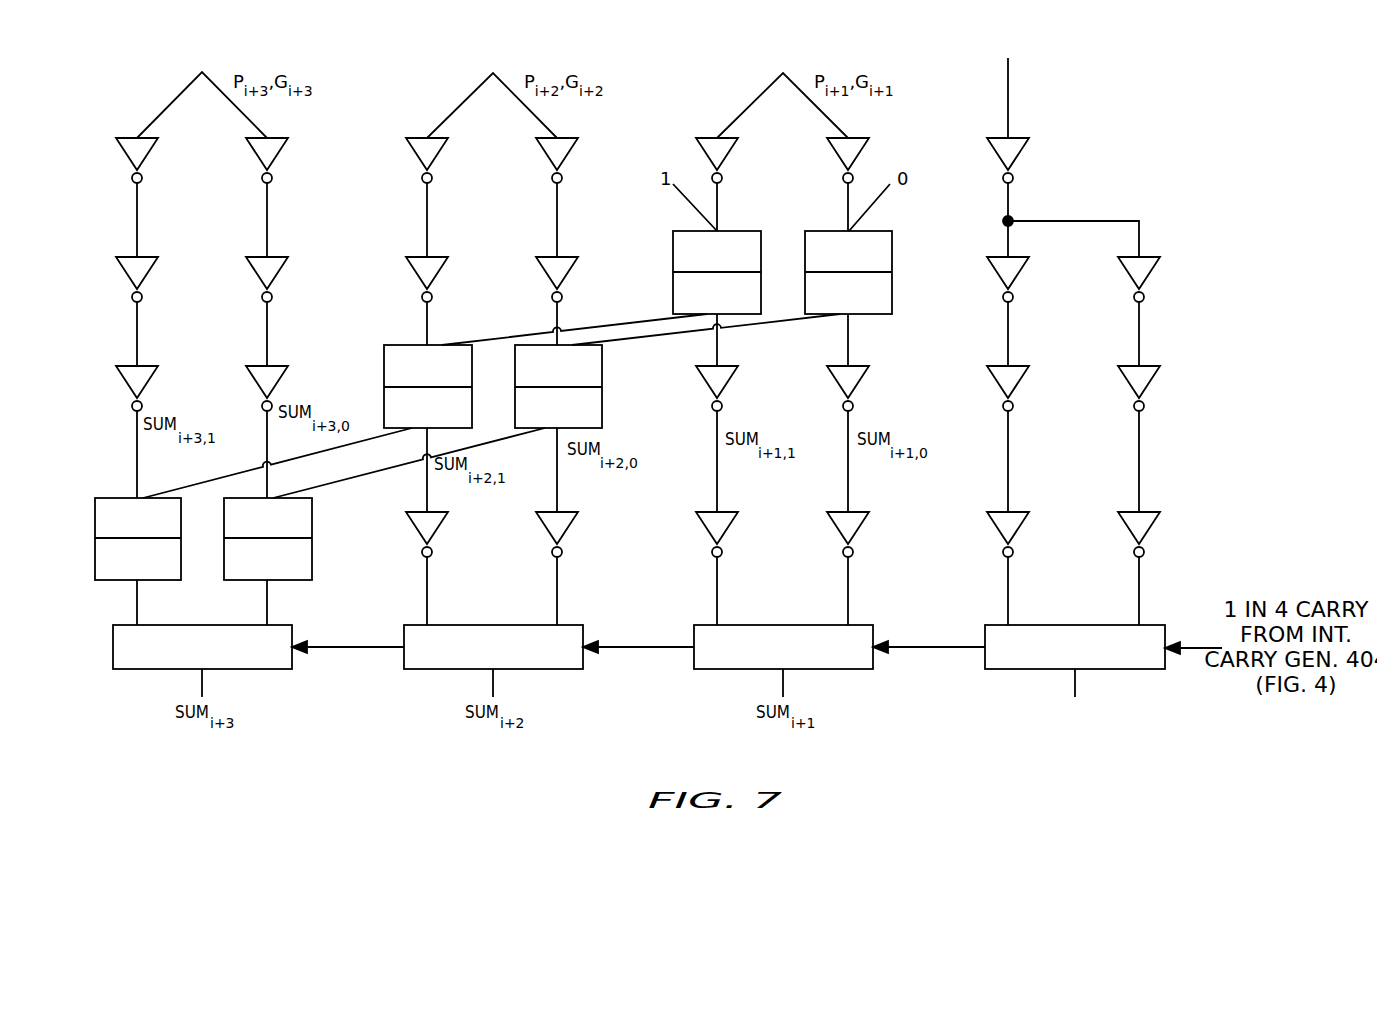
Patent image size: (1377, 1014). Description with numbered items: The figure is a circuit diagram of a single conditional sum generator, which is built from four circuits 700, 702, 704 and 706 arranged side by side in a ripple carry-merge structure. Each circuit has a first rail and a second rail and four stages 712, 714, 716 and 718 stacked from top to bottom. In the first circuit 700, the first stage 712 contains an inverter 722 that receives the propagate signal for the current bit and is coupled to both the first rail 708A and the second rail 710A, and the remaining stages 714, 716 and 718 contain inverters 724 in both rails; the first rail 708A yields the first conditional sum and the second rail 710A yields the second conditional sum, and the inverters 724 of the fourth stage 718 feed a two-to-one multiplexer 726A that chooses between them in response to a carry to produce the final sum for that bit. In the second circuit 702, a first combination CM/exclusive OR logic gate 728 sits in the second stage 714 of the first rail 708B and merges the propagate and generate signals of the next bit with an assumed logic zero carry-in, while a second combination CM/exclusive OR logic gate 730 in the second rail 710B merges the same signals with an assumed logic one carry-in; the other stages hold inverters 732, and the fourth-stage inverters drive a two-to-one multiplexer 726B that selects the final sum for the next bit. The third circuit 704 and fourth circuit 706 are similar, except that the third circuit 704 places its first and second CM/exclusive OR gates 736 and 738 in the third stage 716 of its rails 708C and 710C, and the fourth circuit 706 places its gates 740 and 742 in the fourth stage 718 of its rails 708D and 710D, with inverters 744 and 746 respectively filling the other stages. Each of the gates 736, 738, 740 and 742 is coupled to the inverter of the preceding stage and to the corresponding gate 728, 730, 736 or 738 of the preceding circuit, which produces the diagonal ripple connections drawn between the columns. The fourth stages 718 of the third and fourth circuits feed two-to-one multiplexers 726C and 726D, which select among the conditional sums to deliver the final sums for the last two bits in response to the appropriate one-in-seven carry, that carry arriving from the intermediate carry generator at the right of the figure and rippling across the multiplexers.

The first circuit 700 is at (1091, 380).
The second circuit 702 is at (752, 92).
The third circuit 704 is at (462, 92).
The fourth circuit 706 is at (172, 92).
The first rail 708A is at (1139, 320).
The first rail 708B is at (848, 341).
The first rail 708C is at (557, 204).
The first rail 708D is at (267, 204).
The second rail 710A is at (1008, 320).
The second rail 710B is at (717, 341).
The second rail 710C is at (427, 204).
The second rail 710D is at (137, 204).
The first stage 712 is at (1041, 151).
The second stage 714 is at (1165, 279).
The third stage 716 is at (1165, 389).
The fourth stage 718 is at (1178, 533).
The inverter 722 is at (995, 138).
The inverters 724 is at (1098, 395).
The 2:1 multiplexer 726A is at (990, 625).
The 2:1 multiplexer 726B is at (700, 625).
The 2:1 multiplexer 726C is at (411, 625).
The 2:1 multiplexer 726D is at (120, 625).
The first combination CM/exclusive OR logic gate 728 is at (823, 231).
The second combination CM/exclusive OR logic gate 730 is at (691, 231).
The inverters 732 is at (705, 138).
The first CM/exclusive OR gate 736 is at (602, 382).
The second CM/exclusive OR gate 738 is at (389, 345).
The first CM/exclusive OR gate 740 is at (312, 519).
The second CM/exclusive OR gate 742 is at (100, 498).
The inverters 744 is at (415, 138).
The inverters 746 is at (125, 138).